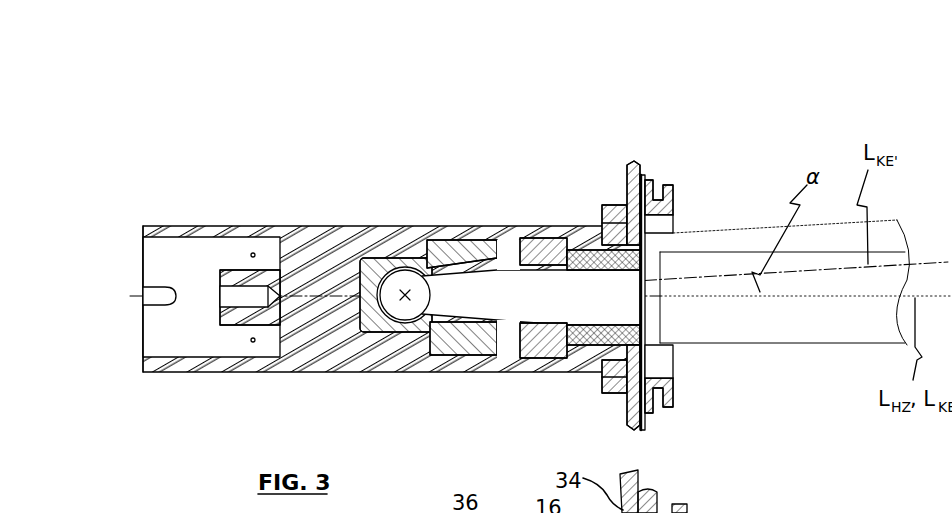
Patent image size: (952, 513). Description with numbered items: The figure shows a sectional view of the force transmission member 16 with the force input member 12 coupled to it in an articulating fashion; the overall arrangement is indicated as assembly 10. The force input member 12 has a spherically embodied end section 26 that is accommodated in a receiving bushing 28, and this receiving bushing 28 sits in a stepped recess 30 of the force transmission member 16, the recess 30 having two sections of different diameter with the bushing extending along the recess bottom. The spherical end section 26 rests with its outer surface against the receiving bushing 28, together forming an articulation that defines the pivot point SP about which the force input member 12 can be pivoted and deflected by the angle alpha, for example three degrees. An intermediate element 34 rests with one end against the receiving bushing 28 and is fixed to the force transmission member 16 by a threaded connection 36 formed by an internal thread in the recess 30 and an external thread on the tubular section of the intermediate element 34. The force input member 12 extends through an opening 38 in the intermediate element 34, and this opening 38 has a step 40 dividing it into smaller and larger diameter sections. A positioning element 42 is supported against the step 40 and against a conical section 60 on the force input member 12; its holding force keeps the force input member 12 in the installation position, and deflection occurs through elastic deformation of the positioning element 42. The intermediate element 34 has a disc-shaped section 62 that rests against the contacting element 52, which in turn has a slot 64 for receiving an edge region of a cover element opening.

The ball joint coupling assembly 10 is at (735, 124).
The force input member 12 is at (806, 285).
The force transmission member 16 is at (391, 263).
The spherical end section 26 is at (405, 366).
The receiving bushing 28 is at (386, 369).
The recess 30 is at (479, 213).
The intermediate element 34 is at (629, 172).
The threaded connection 36 is at (483, 378).
The opening 38 is at (603, 216).
The step 40 is at (546, 214).
The positioning element 42 is at (591, 381).
The contacting element 52 is at (694, 187).
The conical section 60 is at (673, 377).
The disc-shaped section 62 is at (607, 402).
The slot 64 is at (664, 274).